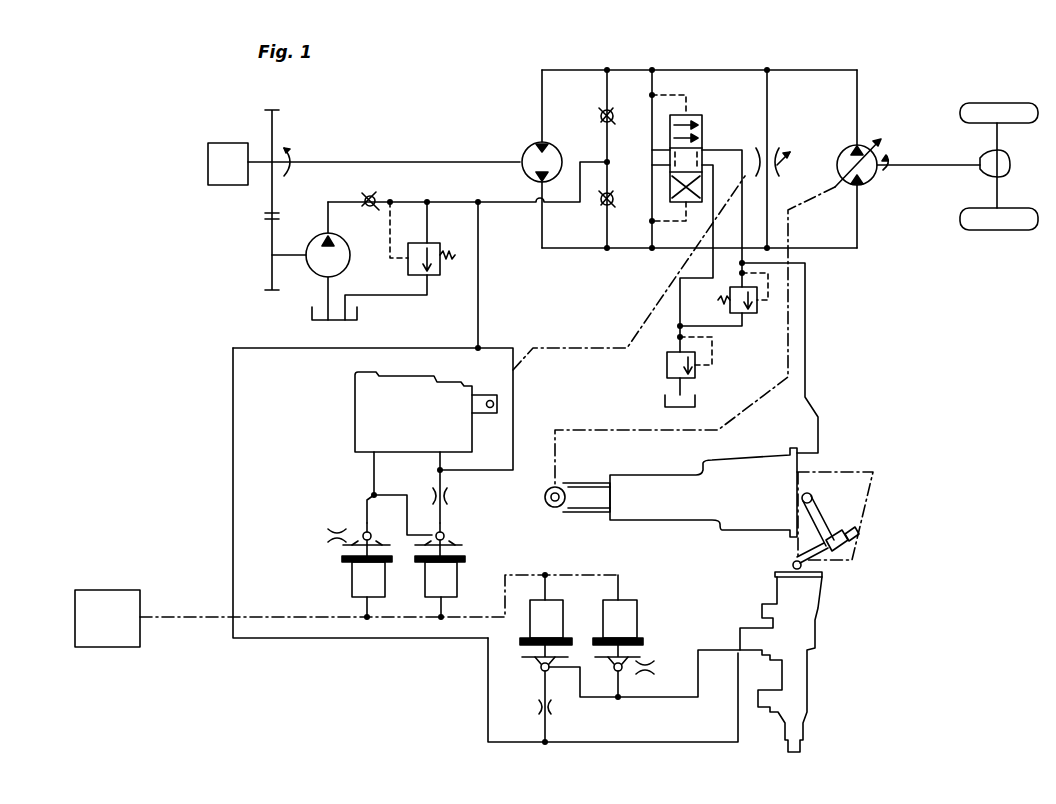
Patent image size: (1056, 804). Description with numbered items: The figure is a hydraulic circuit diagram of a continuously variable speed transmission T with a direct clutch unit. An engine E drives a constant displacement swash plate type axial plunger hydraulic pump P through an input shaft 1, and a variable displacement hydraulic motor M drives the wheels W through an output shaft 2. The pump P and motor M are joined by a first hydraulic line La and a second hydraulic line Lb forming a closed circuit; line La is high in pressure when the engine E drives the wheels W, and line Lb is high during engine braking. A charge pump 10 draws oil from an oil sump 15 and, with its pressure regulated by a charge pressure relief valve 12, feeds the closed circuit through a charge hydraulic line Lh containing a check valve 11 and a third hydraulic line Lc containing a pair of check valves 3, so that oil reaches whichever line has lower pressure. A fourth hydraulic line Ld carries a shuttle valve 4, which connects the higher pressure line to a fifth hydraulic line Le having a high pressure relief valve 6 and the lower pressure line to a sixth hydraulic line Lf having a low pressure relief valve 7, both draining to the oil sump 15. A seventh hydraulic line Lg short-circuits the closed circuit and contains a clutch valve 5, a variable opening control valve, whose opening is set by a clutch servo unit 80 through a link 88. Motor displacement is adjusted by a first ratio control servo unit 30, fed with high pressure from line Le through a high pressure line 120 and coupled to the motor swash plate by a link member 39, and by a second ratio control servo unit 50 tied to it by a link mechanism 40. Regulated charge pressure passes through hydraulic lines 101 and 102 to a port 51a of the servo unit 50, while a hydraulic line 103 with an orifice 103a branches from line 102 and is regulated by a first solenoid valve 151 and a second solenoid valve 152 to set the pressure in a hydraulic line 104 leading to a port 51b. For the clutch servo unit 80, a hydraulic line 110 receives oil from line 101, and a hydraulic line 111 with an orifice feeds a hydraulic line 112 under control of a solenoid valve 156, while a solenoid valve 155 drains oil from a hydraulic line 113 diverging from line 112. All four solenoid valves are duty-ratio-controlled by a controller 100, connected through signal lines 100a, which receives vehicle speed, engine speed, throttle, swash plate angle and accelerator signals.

The engine E is at (208, 162).
The input shaft 1 is at (439, 162).
The hydraulic pump P is at (521, 153).
The hydraulic motor M is at (858, 144).
The continuously variable speed transmission T is at (832, 59).
The wheels W is at (1017, 98).
The output shaft 2 is at (948, 162).
The check valves 3 is at (594, 106).
The shuttle valve 4 is at (702, 118).
The clutch valve 5 is at (780, 168).
The high pressure relief valve 6 is at (757, 305).
The low pressure relief valve 7 is at (695, 376).
The charge pump 10 is at (350, 263).
The check valve 11 is at (366, 215).
The charge pressure relief valve 12 is at (431, 242).
The oil sump 15 is at (358, 316).
The first hydraulic line La is at (574, 246).
The second hydraulic line Lb is at (580, 70).
The third hydraulic line Lc is at (607, 150).
The fourth hydraulic line Ld is at (652, 83).
The fifth hydraulic line Le is at (728, 148).
The sixth hydraulic line Lf is at (680, 296).
The seventh hydraulic line Lg is at (767, 104).
The charge hydraulic line Lh is at (512, 206).
The first ratio control servo unit 30 is at (685, 525).
The link member 39 is at (790, 318).
The link mechanism 40 is at (833, 524).
The second ratio control servo unit 50 is at (766, 583).
The port 51a is at (770, 626).
The port 51b is at (770, 656).
The clutch servo unit 80 is at (348, 408).
The link 88 is at (606, 344).
The controller 100 is at (120, 590).
The control signal line 100a is at (286, 612).
The hydraulic line 101 is at (478, 300).
The hydraulic line 102 is at (408, 640).
The hydraulic line 103 is at (538, 726).
The orifice 103a is at (551, 709).
The hydraulic line 104 is at (666, 698).
The hydraulic line 110 is at (444, 460).
The hydraulic line 111 is at (446, 508).
The hydraulic line 112 is at (404, 484).
The hydraulic line 113 is at (364, 507).
The high pressure line 120 is at (806, 356).
The first solenoid valve 151 is at (562, 620).
The second solenoid valve 152 is at (642, 620).
The solenoid valve 155 is at (344, 576).
The solenoid valve 156 is at (462, 578).